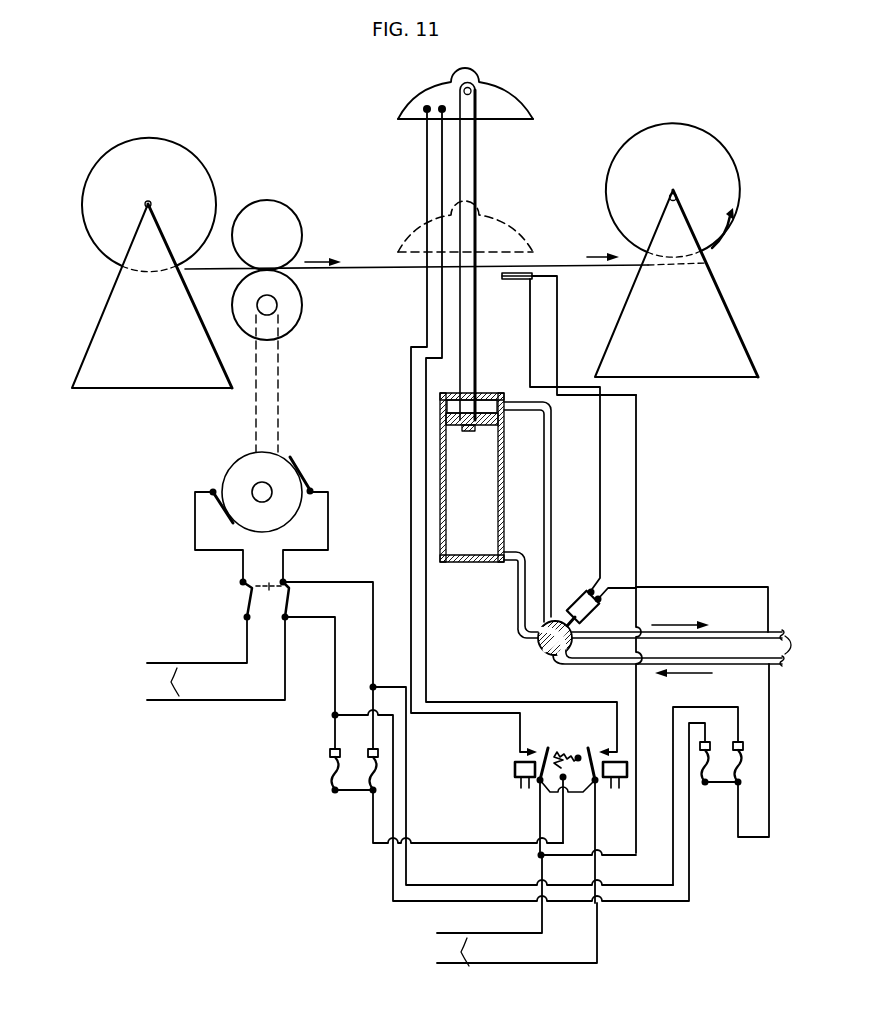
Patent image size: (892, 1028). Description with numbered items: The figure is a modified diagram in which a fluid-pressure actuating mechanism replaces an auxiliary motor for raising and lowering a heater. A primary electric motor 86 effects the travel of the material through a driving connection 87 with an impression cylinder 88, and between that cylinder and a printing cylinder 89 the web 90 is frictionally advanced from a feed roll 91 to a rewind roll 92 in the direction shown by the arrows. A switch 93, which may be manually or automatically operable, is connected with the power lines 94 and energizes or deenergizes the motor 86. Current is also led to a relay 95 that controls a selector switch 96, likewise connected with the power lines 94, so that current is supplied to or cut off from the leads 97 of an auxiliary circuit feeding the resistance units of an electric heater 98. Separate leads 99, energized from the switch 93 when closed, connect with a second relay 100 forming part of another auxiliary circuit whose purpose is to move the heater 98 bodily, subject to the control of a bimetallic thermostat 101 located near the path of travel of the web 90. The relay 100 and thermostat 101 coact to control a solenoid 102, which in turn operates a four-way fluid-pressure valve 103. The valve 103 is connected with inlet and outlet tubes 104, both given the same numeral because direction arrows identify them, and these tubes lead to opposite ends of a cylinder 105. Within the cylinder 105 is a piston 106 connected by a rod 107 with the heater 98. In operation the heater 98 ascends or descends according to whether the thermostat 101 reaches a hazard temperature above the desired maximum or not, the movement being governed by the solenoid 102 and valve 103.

The primary motor 86 is at (284, 461).
The driving connection 87 is at (282, 372).
The impression cylinder 88 is at (300, 303).
The printing cylinder 89 is at (297, 216).
The web 90 is at (354, 266).
The feed roll 91 is at (193, 156).
The rewind roll 92 is at (710, 147).
The switch 93 is at (249, 600).
The power lines 94 is at (370, 791).
The relay 95 is at (330, 773).
The selector switch 96 is at (553, 753).
The leads 97 is at (425, 605).
The electric heater 98 is at (525, 104).
The leads 99 is at (470, 901).
The second relay 100 is at (712, 784).
The bimetallic thermostat 101 is at (512, 280).
The solenoid 102 is at (580, 594).
The four-way fluid-pressure valve 103 is at (541, 649).
The inlet and outlet tubes 104 is at (691, 649).
The cylinder 105 is at (499, 495).
The piston 106 is at (488, 432).
The rod 107 is at (476, 158).